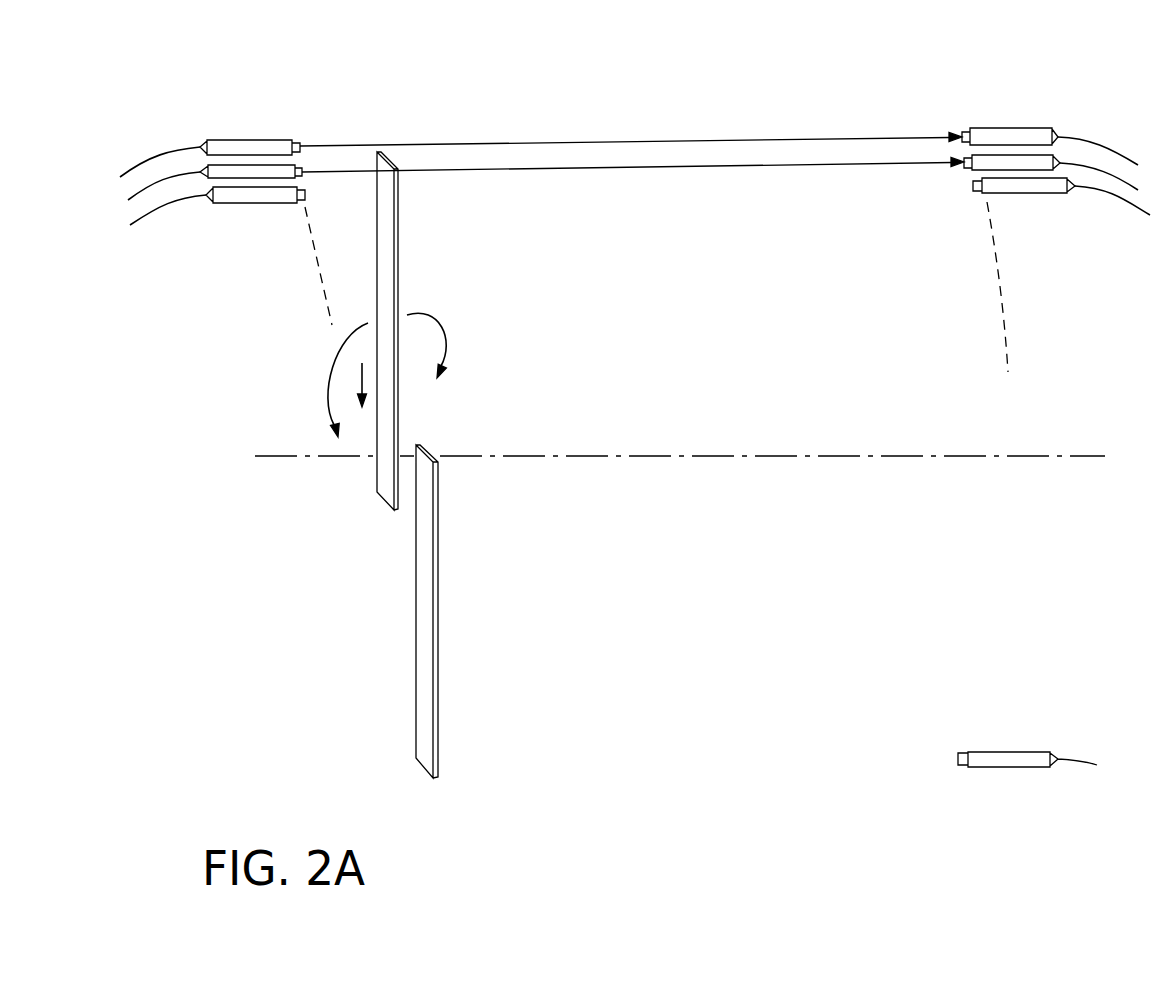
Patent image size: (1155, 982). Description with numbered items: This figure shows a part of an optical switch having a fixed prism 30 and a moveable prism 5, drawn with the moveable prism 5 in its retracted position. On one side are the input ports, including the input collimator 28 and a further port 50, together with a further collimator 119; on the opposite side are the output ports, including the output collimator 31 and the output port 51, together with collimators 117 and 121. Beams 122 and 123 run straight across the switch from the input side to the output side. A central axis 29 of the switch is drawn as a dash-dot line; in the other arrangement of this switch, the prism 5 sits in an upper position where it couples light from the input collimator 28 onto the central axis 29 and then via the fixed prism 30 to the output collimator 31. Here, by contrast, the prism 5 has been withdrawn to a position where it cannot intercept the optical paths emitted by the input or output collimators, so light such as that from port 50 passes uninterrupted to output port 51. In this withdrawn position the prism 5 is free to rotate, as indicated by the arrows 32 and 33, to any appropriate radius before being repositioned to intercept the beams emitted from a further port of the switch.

The prism 5 is at (386, 255).
The input collimator 28 is at (288, 121).
The central axis 29 is at (294, 477).
The fixed prism 30 is at (402, 745).
The output collimator 31 is at (1049, 779).
The arrow 32 is at (332, 366).
The arrow 33 is at (452, 333).
The port 50 is at (243, 146).
The output port 51 is at (1030, 134).
The connector 117 is at (996, 115).
The optical fiber cord 119 is at (222, 174).
The optical fiber cord 121 is at (1052, 160).
The optical fiber 122 is at (664, 128).
The optical fiber 123 is at (815, 152).